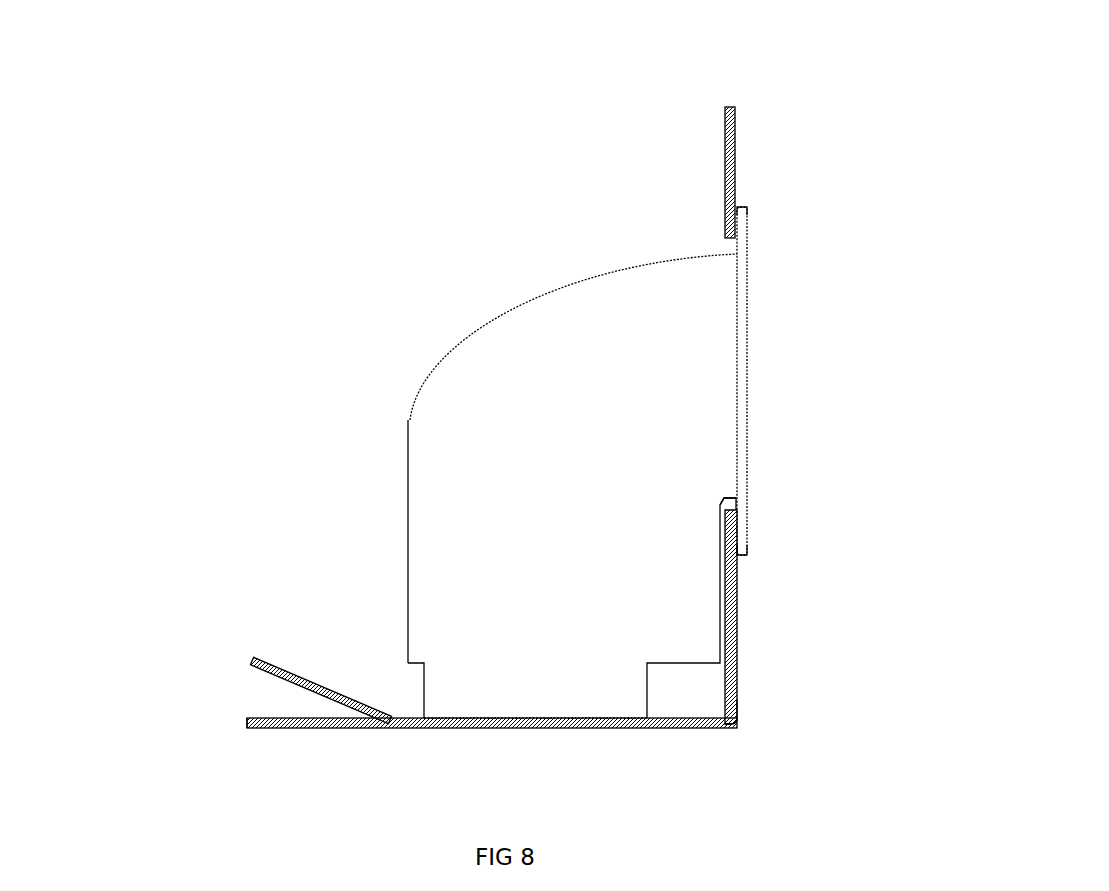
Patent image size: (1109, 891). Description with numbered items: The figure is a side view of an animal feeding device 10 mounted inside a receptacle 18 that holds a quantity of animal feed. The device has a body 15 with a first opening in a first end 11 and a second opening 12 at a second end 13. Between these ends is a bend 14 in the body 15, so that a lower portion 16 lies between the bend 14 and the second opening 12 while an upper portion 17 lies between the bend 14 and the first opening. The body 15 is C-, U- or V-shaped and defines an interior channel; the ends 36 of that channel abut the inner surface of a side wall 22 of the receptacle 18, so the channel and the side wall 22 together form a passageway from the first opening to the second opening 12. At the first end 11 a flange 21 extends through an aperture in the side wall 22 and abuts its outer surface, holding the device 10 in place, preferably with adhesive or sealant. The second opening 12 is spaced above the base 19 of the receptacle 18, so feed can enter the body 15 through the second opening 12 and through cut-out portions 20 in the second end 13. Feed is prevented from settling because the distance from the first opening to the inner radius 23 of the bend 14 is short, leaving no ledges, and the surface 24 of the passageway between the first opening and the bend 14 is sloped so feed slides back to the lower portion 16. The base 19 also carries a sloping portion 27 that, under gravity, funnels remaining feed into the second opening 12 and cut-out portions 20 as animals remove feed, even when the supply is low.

The animal feeding device 10 is at (477, 272).
The first end 11 is at (749, 383).
The second opening 12 is at (565, 718).
The second end 13 is at (435, 718).
The bend 14 is at (487, 397).
The body 15 is at (405, 430).
The lower portion 16 is at (535, 623).
The upper portion 17 is at (705, 278).
The receptacle 18 is at (745, 142).
The base 19 is at (260, 728).
The cut-out portions 20 is at (411, 688).
The flange 21 is at (747, 233).
The side wall 22 is at (738, 622).
The inner radius 23 is at (740, 505).
The surface 24 is at (727, 490).
The sloping portion 27 is at (257, 666).
The ends 36 is at (737, 665).